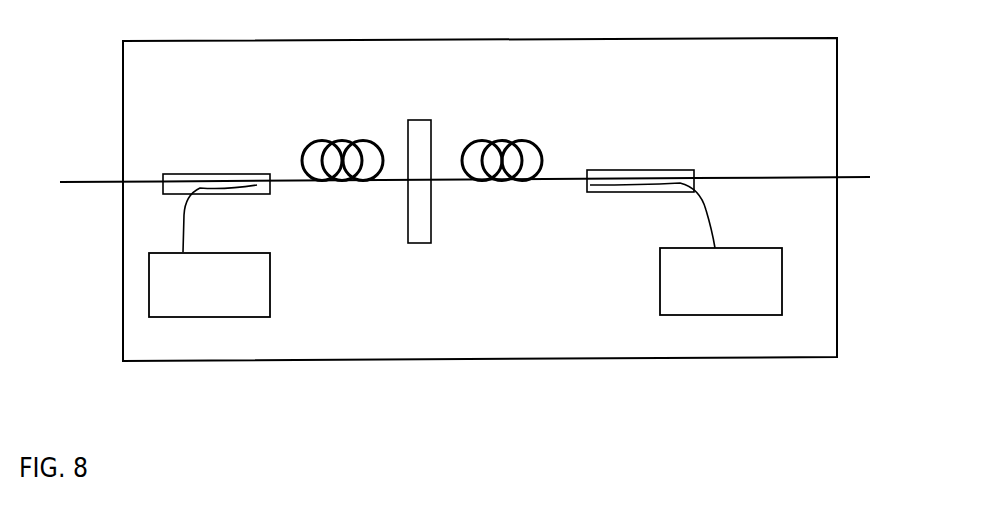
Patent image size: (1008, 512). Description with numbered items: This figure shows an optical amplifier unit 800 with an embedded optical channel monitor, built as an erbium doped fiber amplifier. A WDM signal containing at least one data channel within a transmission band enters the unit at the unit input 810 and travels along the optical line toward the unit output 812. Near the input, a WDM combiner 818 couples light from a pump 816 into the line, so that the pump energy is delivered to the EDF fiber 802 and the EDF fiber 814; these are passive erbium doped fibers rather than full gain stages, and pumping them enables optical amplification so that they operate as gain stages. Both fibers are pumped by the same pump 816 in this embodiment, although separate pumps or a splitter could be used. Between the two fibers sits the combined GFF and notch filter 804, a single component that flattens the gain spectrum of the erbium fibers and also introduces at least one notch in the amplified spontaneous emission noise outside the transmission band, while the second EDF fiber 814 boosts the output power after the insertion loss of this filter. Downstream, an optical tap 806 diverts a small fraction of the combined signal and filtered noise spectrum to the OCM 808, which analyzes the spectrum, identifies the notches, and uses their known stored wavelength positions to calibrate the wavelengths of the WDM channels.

The optical amplifier unit 800 is at (837, 230).
The EDF fiber 802 is at (322, 133).
The combined GFF and notch filter 804 is at (420, 120).
The optical tap 806 is at (635, 170).
The OCM 808 is at (655, 263).
The unit input 810 is at (115, 190).
The unit output 812 is at (848, 168).
The EDF fiber 814 is at (533, 137).
The pump 816 is at (270, 273).
The WDM combiner 818 is at (195, 167).